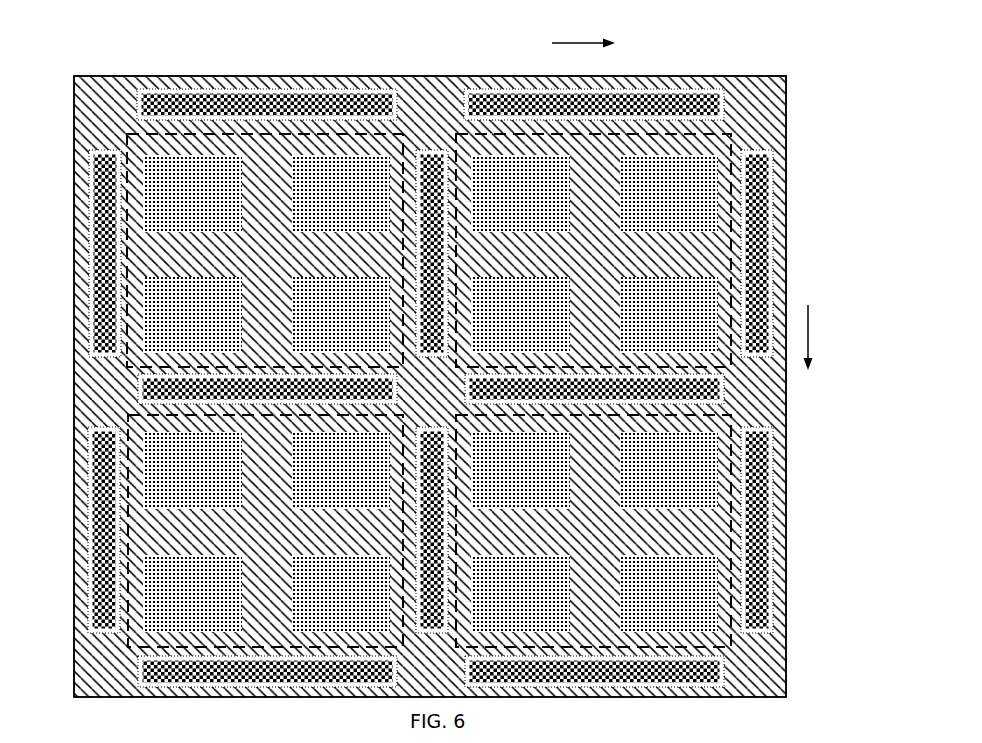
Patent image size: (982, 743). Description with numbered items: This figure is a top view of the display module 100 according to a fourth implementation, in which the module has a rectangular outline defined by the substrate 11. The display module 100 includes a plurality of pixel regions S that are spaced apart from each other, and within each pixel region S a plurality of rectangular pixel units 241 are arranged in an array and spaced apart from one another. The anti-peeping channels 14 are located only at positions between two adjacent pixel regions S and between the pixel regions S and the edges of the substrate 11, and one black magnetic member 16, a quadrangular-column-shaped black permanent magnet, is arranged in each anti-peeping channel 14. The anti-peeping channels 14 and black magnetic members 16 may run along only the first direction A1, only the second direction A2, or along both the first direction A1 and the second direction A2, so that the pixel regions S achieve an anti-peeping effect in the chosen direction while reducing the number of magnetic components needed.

The display module 100 is at (468, 47).
The substrate 11 is at (747, 87).
The pixel unit 241 is at (703, 150).
The anti-peeping channel 14 is at (769, 166).
The black magnetic member 16 is at (770, 201).
The pixel region S is at (127, 132).
The first direction A1 is at (583, 31).
The second direction A2 is at (833, 337).